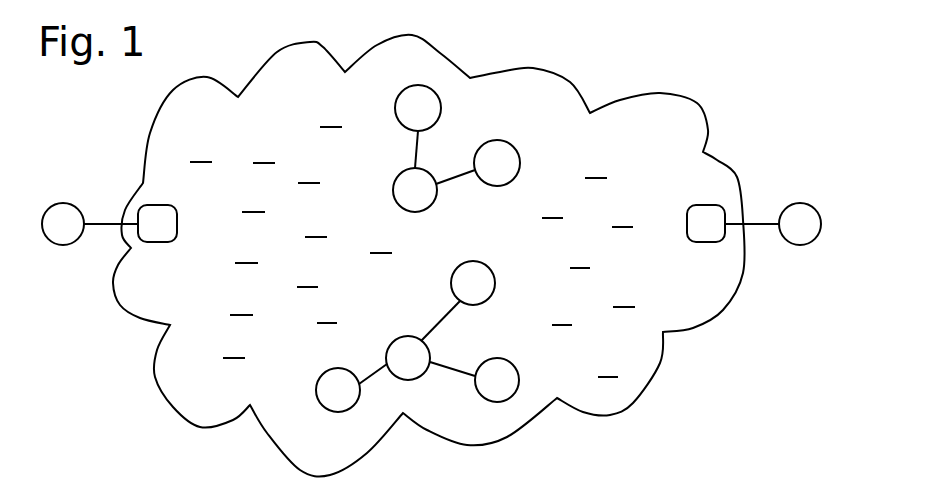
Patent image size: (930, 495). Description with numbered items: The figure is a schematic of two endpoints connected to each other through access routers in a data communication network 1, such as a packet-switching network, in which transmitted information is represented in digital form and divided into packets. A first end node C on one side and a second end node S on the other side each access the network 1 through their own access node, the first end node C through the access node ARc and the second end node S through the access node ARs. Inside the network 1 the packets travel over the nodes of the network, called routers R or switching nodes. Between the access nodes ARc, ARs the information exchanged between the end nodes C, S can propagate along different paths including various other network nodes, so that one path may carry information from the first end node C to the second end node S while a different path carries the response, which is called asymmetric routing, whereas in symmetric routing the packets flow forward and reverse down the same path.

The network 1 is at (567, 88).
The first end node C is at (90, 208).
The second end node S is at (773, 208).
The router R is at (418, 248).
The access node ARc is at (157, 239).
The access node ARs is at (706, 239).